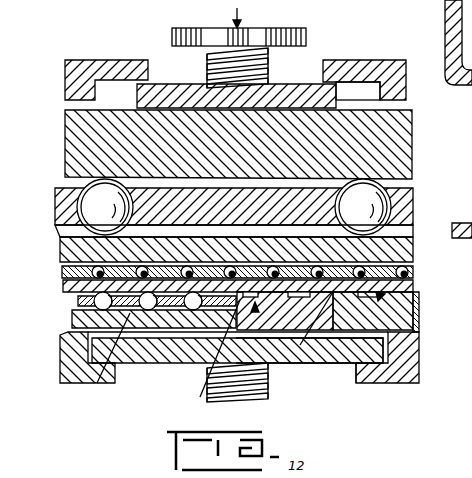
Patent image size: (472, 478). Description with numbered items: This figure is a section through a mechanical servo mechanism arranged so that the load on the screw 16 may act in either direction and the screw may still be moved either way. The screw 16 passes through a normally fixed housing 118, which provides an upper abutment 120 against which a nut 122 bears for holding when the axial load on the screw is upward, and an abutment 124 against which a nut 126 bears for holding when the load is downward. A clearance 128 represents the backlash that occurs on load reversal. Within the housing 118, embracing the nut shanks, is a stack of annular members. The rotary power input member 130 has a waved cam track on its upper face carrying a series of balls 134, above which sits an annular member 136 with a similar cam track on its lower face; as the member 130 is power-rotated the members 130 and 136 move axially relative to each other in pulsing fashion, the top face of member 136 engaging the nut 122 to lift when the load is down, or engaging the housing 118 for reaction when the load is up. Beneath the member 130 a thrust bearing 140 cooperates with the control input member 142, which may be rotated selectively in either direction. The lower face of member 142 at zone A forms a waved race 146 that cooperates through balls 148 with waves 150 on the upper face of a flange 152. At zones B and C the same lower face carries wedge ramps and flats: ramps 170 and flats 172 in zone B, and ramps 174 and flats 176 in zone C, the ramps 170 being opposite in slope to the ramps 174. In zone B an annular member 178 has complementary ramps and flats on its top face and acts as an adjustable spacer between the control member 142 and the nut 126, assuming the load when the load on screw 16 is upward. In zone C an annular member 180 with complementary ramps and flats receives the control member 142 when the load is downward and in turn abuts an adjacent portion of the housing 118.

The screw 16 is at (268, 57).
The housing 118 is at (406, 75).
The upper abutment 120 is at (330, 67).
The nut 122 is at (333, 92).
The abutment 124 is at (360, 366).
The nut 126 is at (311, 360).
The clearance 128 is at (143, 79).
The rotary power input member 130 is at (413, 249).
The balls 134 is at (234, 207).
The annular member 136 is at (413, 152).
The thrust bearing 140 is at (397, 233).
The control input member 142 is at (62, 274).
The waved race 146 is at (66, 291).
The balls 148 is at (100, 300).
The waves 150 is at (75, 313).
The flange 152 is at (62, 346).
The ramps 170 is at (204, 394).
The flats 172 is at (192, 364).
The ramps 174 is at (405, 285).
The flats 176 is at (412, 299).
The annular member 178 is at (300, 345).
The annular member 180 is at (418, 326).
The region A is at (97, 383).
The region B is at (255, 312).
The region C is at (383, 297).